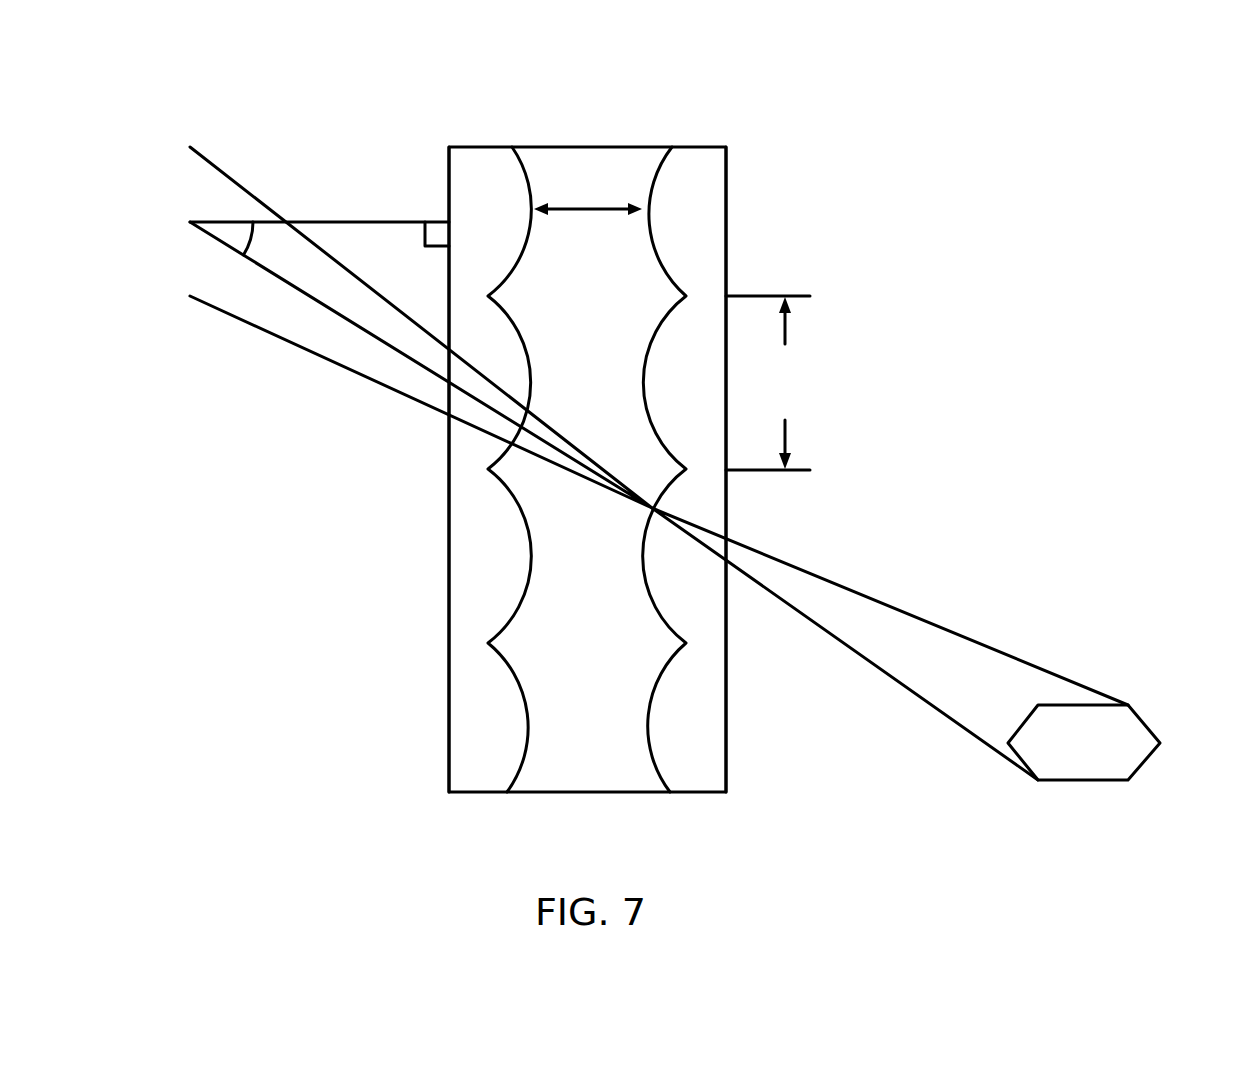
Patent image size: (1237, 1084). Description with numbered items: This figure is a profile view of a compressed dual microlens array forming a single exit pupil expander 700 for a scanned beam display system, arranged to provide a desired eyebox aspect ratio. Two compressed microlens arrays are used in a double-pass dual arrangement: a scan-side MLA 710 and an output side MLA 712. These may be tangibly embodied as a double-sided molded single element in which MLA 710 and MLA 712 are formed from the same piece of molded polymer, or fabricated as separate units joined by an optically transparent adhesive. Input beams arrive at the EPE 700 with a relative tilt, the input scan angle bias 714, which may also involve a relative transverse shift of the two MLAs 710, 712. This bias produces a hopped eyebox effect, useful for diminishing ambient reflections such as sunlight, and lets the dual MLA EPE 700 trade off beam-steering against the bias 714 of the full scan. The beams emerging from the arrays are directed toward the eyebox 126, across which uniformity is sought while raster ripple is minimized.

The exit pupil expander (EPE) 700 is at (655, 432).
The scan-side compressed microlens array (MLA) 710 is at (449, 170).
The output side compressed microlens array (MLA) 712 is at (727, 170).
The input scan angle bias (θ) 714 is at (282, 248).
The eyebox 126 is at (1147, 724).